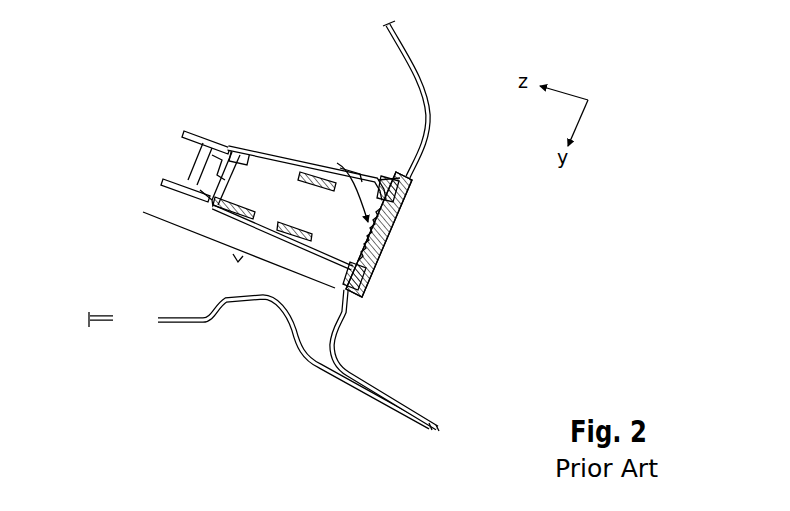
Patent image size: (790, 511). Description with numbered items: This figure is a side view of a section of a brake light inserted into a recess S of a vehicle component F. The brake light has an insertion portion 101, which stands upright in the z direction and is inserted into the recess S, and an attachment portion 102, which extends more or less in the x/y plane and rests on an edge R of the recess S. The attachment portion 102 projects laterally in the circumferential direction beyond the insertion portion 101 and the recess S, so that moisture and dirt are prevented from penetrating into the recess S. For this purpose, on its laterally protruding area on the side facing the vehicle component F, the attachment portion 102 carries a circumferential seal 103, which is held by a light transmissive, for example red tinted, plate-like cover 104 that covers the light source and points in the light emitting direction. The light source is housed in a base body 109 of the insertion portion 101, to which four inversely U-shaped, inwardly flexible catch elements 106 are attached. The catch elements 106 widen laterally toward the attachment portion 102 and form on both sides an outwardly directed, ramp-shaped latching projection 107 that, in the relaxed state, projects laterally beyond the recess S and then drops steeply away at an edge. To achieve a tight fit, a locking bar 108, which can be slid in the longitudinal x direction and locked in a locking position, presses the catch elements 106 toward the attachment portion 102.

The insertion portion 101 is at (239, 252).
The attachment portion 102 is at (397, 210).
The circumferential seal 103 is at (362, 283).
The plate-like cover 104 is at (448, 204).
The catch elements 106 is at (258, 153).
The latching projection 107 is at (357, 175).
The locking bar 108 is at (217, 140).
The base body 109 is at (295, 220).
The vehicle component F is at (413, 60).
The edge of the recess R is at (380, 173).
The recess S is at (343, 185).